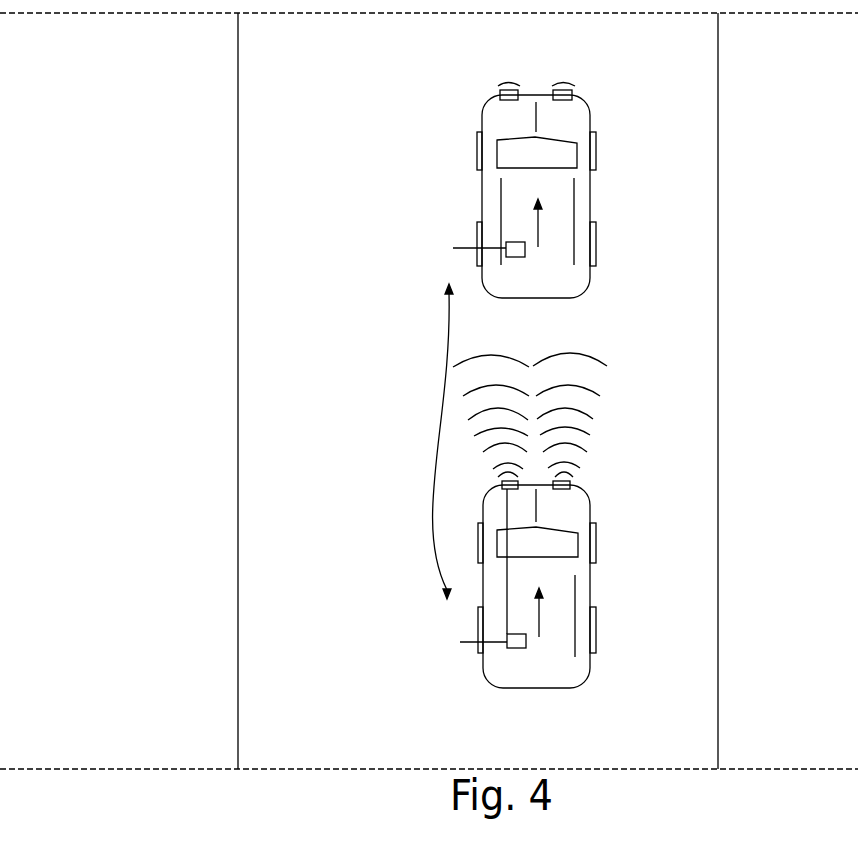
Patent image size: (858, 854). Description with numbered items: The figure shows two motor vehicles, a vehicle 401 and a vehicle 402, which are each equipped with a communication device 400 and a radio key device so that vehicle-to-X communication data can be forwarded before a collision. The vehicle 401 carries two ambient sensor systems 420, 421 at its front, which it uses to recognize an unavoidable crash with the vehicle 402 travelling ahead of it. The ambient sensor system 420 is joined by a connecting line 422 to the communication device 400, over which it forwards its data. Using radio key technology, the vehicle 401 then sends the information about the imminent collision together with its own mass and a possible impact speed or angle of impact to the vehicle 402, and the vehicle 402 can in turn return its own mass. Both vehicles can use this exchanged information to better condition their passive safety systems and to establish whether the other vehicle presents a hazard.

The communication device 400 is at (507, 246).
The vehicle 401 is at (587, 670).
The vehicle 402 is at (570, 283).
The ambient sensor system 420 is at (503, 483).
The ambient sensor system 421 is at (570, 483).
The connecting line 422 is at (507, 520).